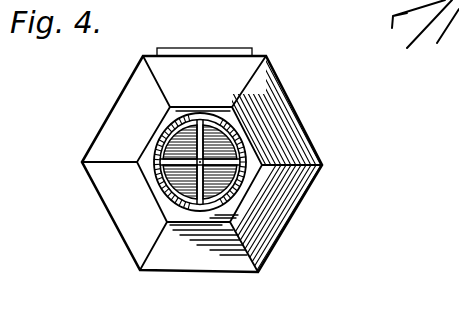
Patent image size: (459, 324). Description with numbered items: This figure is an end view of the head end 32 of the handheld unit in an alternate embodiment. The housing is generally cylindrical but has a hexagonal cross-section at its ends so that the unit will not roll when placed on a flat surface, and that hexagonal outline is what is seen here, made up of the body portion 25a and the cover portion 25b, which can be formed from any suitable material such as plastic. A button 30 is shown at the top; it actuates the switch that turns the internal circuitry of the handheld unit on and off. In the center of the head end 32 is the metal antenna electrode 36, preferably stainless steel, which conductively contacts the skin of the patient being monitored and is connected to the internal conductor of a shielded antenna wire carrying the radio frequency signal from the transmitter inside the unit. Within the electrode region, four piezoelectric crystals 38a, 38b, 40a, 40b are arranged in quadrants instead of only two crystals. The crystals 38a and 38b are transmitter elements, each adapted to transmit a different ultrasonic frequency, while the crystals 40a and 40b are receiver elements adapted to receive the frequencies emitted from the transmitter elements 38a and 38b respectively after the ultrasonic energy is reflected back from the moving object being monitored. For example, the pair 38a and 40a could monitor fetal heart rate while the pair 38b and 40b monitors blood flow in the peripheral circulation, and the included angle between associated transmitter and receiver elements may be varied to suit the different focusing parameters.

The button 30 is at (227, 46).
The head end 32 is at (115, 128).
The antenna electrode 36 is at (238, 140).
The piezoelectric crystal 38a is at (185, 133).
The piezoelectric crystal 38b is at (221, 137).
The piezoelectric crystal 40a is at (180, 182).
The piezoelectric crystal 40b is at (218, 188).
The body portion 25a is at (275, 248).
The cover portion 25b is at (293, 145).